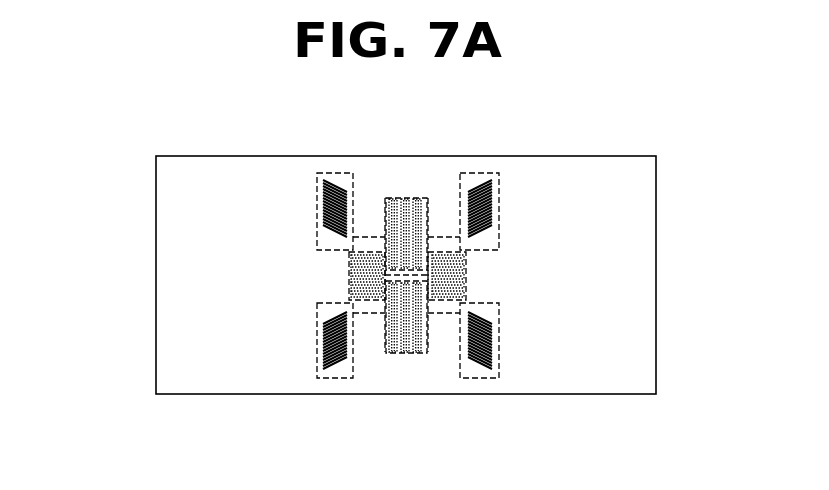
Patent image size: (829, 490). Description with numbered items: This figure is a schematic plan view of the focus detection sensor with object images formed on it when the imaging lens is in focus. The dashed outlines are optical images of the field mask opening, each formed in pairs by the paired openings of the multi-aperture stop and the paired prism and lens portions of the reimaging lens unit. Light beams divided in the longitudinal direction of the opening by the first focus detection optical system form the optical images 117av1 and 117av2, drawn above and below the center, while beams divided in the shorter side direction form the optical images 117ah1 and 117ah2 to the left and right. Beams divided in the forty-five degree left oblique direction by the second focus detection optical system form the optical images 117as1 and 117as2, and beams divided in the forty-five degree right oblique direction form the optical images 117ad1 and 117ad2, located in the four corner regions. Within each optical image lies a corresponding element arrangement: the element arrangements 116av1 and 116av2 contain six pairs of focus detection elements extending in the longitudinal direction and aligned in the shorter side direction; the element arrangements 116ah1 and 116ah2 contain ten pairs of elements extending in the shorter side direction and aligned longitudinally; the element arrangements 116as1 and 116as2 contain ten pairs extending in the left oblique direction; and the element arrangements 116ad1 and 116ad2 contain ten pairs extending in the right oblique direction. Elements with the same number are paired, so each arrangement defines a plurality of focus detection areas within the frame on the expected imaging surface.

The element arrangement 116as1 is at (322, 178).
The optical image 117as1 is at (343, 172).
The element arrangement 116av1 is at (418, 198).
The optical image 117av1 is at (393, 198).
The element arrangement 116ad1 is at (485, 180).
The optical image 117ad1 is at (500, 210).
The element arrangement 116ah1 is at (350, 270).
The optical image 117ah1 is at (350, 287).
The element arrangement 116ah2 is at (465, 263).
The optical image 117ah2 is at (465, 285).
The element arrangement 116ad2 is at (340, 370).
The optical image 117ad2 is at (315, 350).
The element arrangement 116av2 is at (418, 353).
The optical image 117av2 is at (402, 352).
The element arrangement 116as2 is at (483, 368).
The optical image 117as2 is at (500, 352).